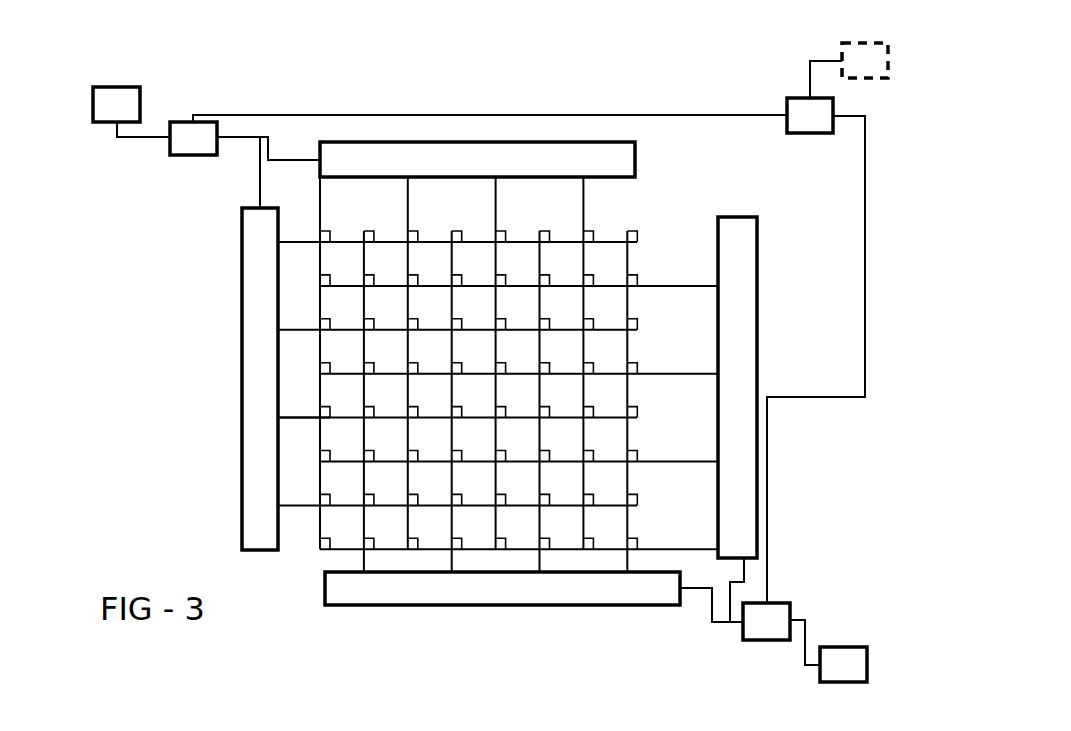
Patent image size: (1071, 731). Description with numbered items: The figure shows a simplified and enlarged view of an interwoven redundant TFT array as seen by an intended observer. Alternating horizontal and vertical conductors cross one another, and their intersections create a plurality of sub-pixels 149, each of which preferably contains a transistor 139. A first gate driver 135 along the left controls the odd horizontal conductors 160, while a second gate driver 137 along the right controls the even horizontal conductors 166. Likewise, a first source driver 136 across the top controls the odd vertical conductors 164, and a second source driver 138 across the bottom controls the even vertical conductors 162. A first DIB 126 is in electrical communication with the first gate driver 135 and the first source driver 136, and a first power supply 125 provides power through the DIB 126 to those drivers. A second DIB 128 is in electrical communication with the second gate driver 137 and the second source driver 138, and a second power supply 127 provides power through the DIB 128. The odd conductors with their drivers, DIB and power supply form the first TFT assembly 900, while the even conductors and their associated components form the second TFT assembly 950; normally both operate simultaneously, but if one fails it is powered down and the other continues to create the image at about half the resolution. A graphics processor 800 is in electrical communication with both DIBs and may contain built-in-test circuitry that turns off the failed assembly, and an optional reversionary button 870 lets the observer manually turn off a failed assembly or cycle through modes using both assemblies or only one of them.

The first power supply 125 is at (115, 100).
The first DIB 126 is at (188, 132).
The second power supply 127 is at (853, 658).
The second DIB 128 is at (753, 625).
The first gate driver 135 is at (255, 247).
The first source driver 136 is at (392, 153).
The second gate driver 137 is at (737, 362).
The second source driver 138 is at (435, 583).
The transistor 139 is at (318, 418).
The sub-pixels 149 is at (602, 450).
The odd horizontal conductors 160 is at (300, 243).
The even vertical conductors 162 is at (448, 522).
The odd vertical conductors 164 is at (583, 193).
The even horizontal conductors 166 is at (700, 372).
The graphics processor 800 is at (807, 110).
The reversionary button 870 is at (860, 54).
The first TFT assembly 900 is at (103, 207).
The second TFT assembly 950 is at (800, 570).